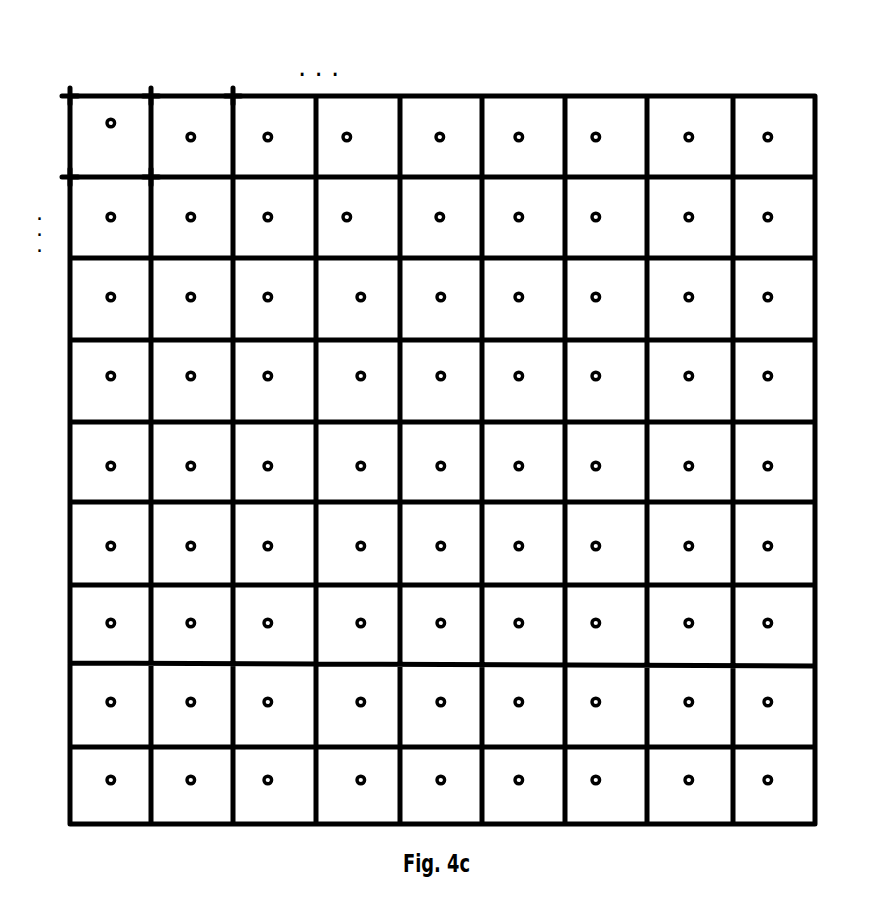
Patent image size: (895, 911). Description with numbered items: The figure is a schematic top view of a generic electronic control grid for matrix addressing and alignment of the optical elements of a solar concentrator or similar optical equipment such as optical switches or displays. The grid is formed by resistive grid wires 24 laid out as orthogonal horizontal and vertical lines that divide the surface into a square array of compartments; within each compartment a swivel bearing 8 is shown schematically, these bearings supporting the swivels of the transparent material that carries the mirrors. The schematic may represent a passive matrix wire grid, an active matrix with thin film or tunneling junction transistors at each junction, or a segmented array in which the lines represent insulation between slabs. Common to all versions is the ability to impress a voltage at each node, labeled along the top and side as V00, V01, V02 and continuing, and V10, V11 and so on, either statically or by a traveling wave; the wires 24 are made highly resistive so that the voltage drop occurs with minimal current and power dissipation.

The resistive grid wires 24 is at (773, 337).
The swivel bearings 8 is at (777, 374).
The node voltage V00 is at (67, 75).
The node voltage V01 is at (149, 75).
The node voltage V02 is at (239, 75).
The node voltage V10 is at (49, 172).
The node voltage V11 is at (134, 159).